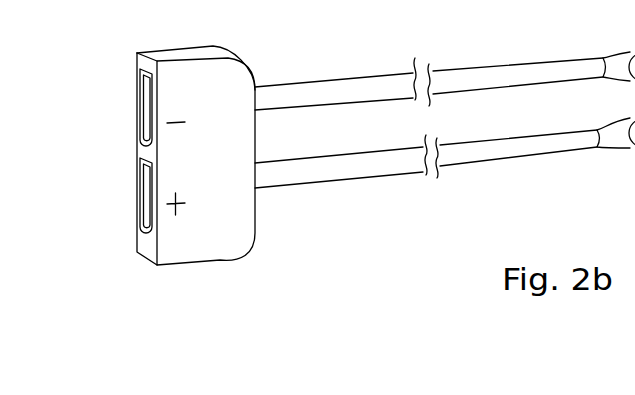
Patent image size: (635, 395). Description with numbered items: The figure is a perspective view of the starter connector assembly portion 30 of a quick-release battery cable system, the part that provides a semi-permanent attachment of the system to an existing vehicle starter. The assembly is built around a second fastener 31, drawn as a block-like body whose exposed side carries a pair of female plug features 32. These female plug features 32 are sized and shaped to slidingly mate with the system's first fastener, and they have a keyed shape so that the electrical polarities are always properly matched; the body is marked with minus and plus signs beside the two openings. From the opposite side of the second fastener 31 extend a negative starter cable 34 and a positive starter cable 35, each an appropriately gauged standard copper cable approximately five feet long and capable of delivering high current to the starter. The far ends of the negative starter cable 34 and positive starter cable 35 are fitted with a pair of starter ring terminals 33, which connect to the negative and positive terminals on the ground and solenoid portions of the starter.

The starter connector assembly portion 30 is at (341, 222).
The second fastener 31 is at (233, 97).
The female plug features 32 is at (147, 180).
The starter ring terminals 33 is at (622, 65).
The negative starter cable 34 is at (465, 85).
The positive starter cable 35 is at (472, 153).